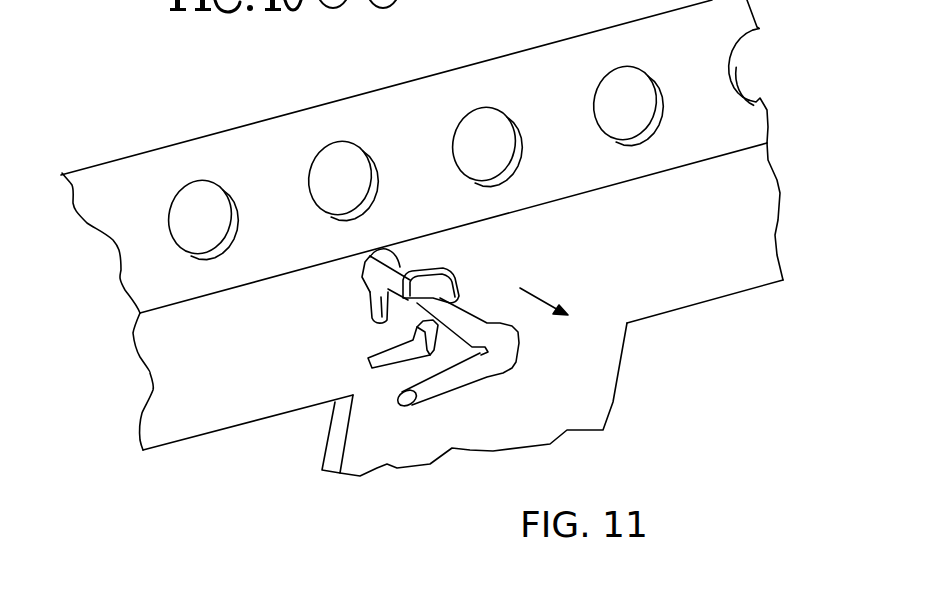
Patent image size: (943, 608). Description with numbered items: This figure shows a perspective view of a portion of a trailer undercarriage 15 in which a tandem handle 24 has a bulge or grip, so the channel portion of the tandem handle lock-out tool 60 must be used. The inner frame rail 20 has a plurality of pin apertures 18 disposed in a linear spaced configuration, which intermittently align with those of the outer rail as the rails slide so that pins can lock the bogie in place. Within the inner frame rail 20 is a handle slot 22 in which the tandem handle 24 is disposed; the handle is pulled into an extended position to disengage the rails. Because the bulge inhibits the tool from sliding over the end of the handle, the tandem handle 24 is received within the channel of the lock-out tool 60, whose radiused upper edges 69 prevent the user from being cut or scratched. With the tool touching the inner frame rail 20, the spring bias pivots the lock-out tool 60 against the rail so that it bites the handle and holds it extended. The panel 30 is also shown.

The trailer undercarriage 15 is at (157, 108).
The pin apertures 18 is at (597, 93).
The inner frame rail 20 is at (748, 202).
The handle slot 22 is at (386, 252).
The tandem handle 24 is at (405, 274).
The panel 30 is at (573, 382).
The tandem handle lock-out tool 60 is at (459, 281).
The upper edges 69 is at (372, 309).